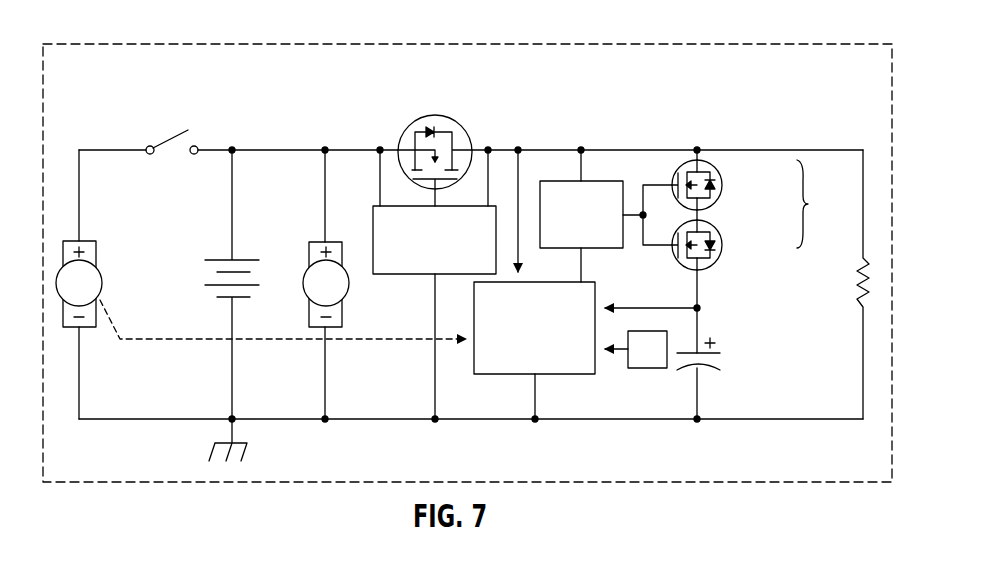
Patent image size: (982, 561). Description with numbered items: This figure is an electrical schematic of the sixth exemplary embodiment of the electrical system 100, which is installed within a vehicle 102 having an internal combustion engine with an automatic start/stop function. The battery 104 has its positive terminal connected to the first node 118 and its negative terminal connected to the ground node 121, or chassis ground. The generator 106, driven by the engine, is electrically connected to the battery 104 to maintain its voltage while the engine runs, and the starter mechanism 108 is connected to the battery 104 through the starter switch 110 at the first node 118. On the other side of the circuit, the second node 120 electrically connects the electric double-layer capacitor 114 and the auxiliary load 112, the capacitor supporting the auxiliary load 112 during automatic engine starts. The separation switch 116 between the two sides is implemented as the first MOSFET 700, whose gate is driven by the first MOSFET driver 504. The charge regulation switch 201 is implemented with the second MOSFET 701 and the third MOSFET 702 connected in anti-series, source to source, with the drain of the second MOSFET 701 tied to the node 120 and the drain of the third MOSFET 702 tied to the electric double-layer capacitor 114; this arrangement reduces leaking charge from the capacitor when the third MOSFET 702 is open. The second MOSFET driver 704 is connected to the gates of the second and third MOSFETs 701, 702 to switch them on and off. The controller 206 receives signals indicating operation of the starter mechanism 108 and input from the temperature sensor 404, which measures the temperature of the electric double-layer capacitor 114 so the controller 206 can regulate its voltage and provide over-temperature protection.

The electrical system 100 is at (775, 92).
The vehicle 102 is at (101, 43).
The battery 104 is at (247, 258).
The generator 106 is at (305, 300).
The starter mechanism 108 is at (102, 283).
The starter switch 110 is at (173, 133).
The auxiliary load 112 is at (857, 288).
The electric double-layer capacitor 114 is at (712, 370).
The separation switch 116 is at (387, 120).
The first node 118 is at (323, 147).
The second node 120 is at (581, 147).
The ground node 121 is at (598, 421).
The charge regulation switch 201 is at (824, 204).
The controller 206 is at (512, 376).
The temperature sensor 404 is at (636, 370).
The first MOSFET driver 504 is at (425, 276).
The first MOSFET 700 is at (443, 115).
The second MOSFET 701 is at (722, 185).
The third MOSFET 702 is at (722, 246).
The second MOSFET driver 704 is at (600, 181).